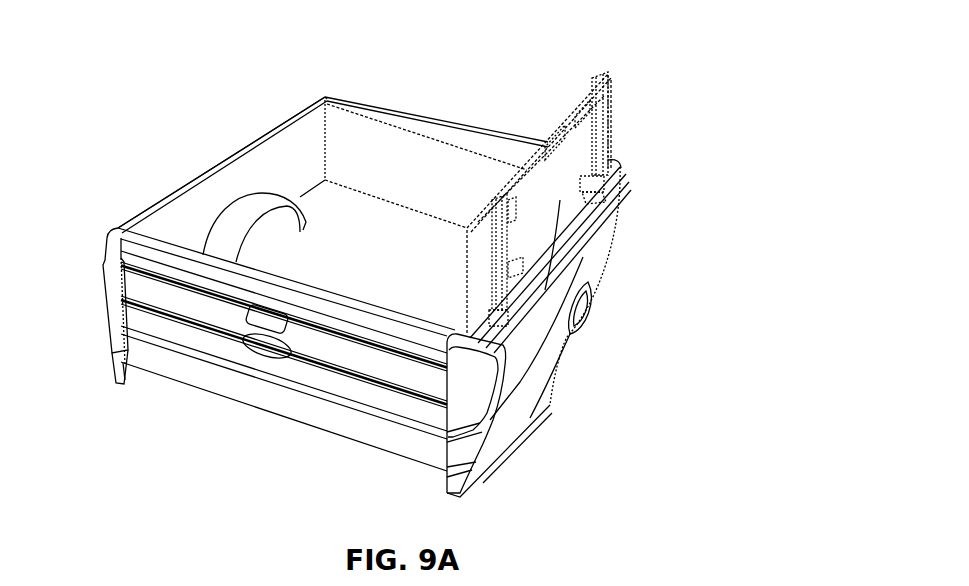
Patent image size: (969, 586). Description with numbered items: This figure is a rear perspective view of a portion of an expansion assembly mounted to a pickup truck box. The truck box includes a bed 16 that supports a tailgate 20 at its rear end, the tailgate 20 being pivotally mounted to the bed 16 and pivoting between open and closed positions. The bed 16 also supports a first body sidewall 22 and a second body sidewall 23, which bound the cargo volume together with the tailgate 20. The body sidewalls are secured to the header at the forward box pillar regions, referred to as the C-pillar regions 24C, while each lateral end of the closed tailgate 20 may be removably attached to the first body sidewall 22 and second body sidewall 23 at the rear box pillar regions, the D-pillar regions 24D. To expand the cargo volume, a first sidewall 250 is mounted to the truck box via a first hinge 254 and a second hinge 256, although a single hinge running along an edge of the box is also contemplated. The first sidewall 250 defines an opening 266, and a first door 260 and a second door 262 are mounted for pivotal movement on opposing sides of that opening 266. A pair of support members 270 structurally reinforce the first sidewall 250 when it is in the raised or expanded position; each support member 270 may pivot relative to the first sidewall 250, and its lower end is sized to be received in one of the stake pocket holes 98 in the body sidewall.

The bed 16 is at (295, 253).
The tailgate 20 is at (168, 372).
The first body sidewall 22 is at (493, 427).
The second body sidewall 23 is at (300, 112).
The C-pillar region 24C is at (326, 96).
The D-pillar region 24D is at (120, 228).
The stake pocket hole 98 is at (586, 186).
The first sidewall 250 is at (610, 80).
The first hinge 254 is at (520, 275).
The second hinge 256 is at (585, 190).
The first door 260 is at (530, 177).
The second door 262 is at (558, 143).
The opening 266 is at (513, 215).
The support member 270 is at (603, 111).